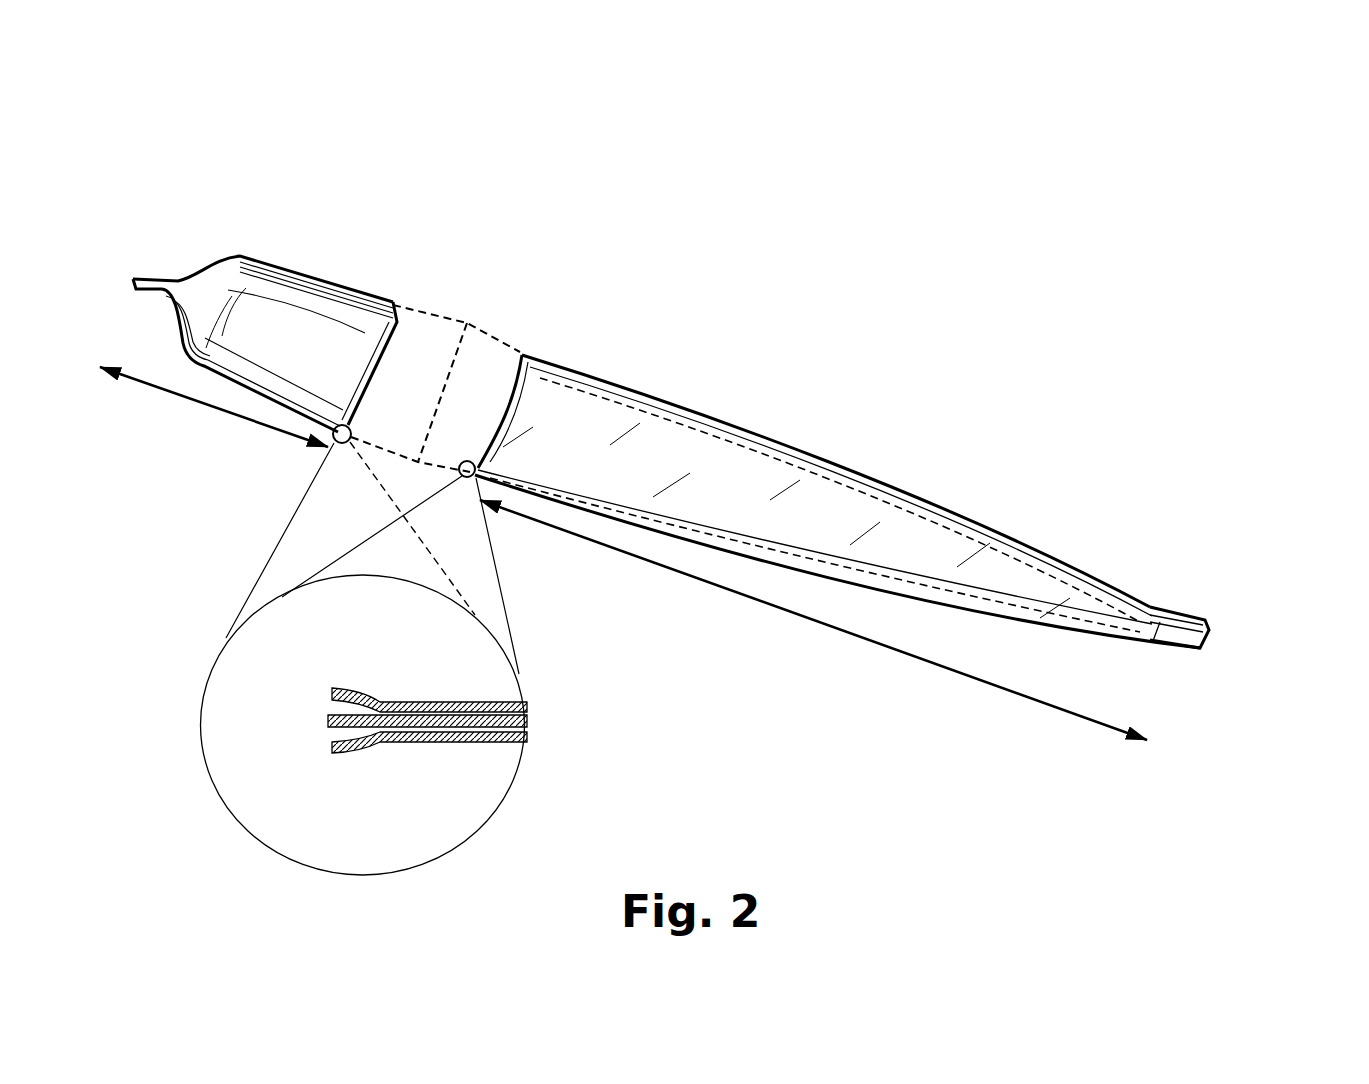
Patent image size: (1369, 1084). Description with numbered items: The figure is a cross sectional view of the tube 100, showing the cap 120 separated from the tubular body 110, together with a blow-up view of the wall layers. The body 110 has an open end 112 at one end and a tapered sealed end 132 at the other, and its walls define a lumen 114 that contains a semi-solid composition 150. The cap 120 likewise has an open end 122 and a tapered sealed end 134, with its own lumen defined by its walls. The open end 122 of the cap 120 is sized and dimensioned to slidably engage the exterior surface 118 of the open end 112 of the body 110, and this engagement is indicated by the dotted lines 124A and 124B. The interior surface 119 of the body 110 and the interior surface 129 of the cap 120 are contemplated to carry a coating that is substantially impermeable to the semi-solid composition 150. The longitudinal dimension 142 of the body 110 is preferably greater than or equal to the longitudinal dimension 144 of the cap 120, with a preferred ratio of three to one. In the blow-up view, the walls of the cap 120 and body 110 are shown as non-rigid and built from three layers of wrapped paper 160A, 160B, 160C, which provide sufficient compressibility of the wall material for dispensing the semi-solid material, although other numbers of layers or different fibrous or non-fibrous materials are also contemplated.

The tube 100 is at (908, 228).
The tubular body 110 is at (775, 407).
The open end 112 is at (483, 467).
The lumen 114 is at (1127, 603).
The exterior surface 118 is at (522, 355).
The interior surface 119 is at (998, 533).
The cap 120 is at (237, 232).
The open end 122 is at (395, 322).
The dotted line 124A is at (418, 460).
The dotted line 124B is at (457, 330).
The interior surface 129 is at (182, 290).
The tapered sealed end 132 is at (1183, 622).
The tapered sealed end 134 is at (138, 285).
The longitudinal dimension 142 is at (735, 596).
The longitudinal dimension 144 is at (220, 410).
The semi-solid composition 150 is at (835, 500).
The layer of wrapped paper 160A is at (332, 692).
The layer of wrapped paper 160B is at (328, 722).
The layer of wrapped paper 160C is at (337, 750).